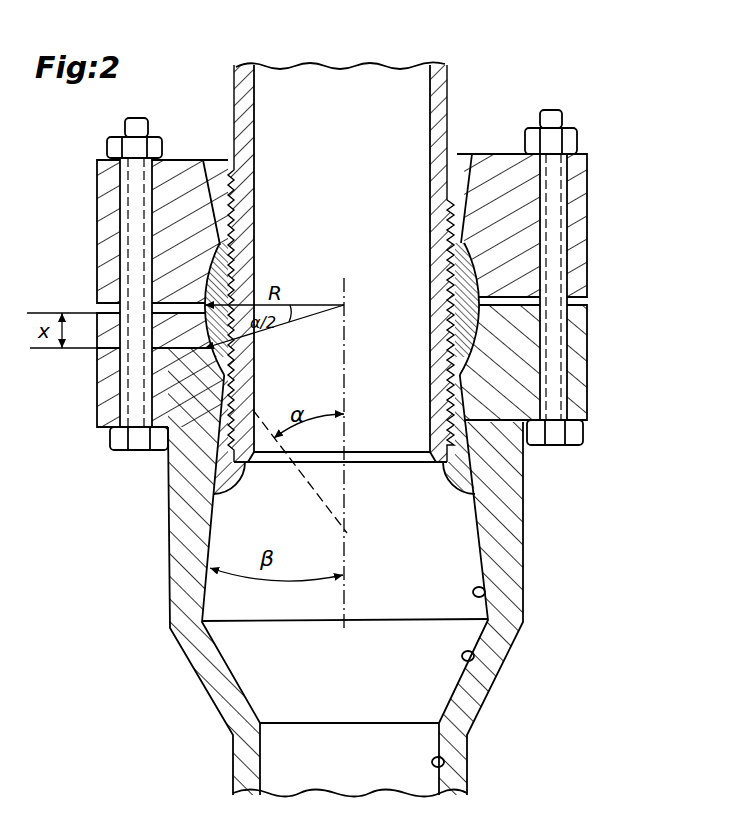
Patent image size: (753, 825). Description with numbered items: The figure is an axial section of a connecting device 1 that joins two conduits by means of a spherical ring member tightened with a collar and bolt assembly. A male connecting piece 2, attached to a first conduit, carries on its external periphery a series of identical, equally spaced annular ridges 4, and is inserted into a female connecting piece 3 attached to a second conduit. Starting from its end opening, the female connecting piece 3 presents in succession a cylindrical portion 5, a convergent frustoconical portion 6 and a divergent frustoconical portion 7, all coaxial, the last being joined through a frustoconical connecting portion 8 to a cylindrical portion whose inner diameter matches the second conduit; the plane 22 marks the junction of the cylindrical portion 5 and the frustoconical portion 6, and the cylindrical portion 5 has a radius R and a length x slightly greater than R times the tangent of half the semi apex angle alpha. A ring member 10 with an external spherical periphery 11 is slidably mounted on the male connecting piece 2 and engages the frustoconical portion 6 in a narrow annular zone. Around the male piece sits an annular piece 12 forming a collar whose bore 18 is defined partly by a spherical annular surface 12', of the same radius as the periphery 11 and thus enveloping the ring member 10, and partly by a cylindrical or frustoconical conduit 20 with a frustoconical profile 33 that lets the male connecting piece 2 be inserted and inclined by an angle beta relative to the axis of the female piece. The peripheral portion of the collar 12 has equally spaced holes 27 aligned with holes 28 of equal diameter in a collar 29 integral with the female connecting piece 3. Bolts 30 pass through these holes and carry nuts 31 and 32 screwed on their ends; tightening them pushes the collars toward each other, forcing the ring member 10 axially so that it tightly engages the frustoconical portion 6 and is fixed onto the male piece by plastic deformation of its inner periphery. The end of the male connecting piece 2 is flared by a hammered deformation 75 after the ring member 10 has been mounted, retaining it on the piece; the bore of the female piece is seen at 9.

The connecting device 1 is at (118, 483).
The male connecting piece 2 is at (445, 84).
The female connecting piece 3 is at (518, 568).
The annular ridges 4 is at (237, 425).
The cylindrical portion 5 is at (203, 327).
The convergent frustoconical portion 6 is at (205, 352).
The divergent frustoconical portion 7 is at (480, 597).
The frustoconical connecting portion 8 is at (470, 660).
The opening 9 is at (440, 763).
The ring member 10 is at (484, 350).
The external spherical periphery 11 is at (205, 263).
The annular piece 12 is at (543, 225).
The spherical annular surface 12' is at (254, 309).
The bore 18 is at (461, 157).
The frustoconical conduit 20 is at (462, 185).
The plane 22 is at (209, 330).
The holes 27 is at (571, 277).
The holes 28 is at (571, 397).
The collar 29 is at (578, 381).
The bolts 30 is at (551, 213).
The nut 31 is at (577, 140).
The nut 32 is at (585, 432).
The frustoconical profile 33 is at (570, 177).
The deformation 75 is at (247, 457).